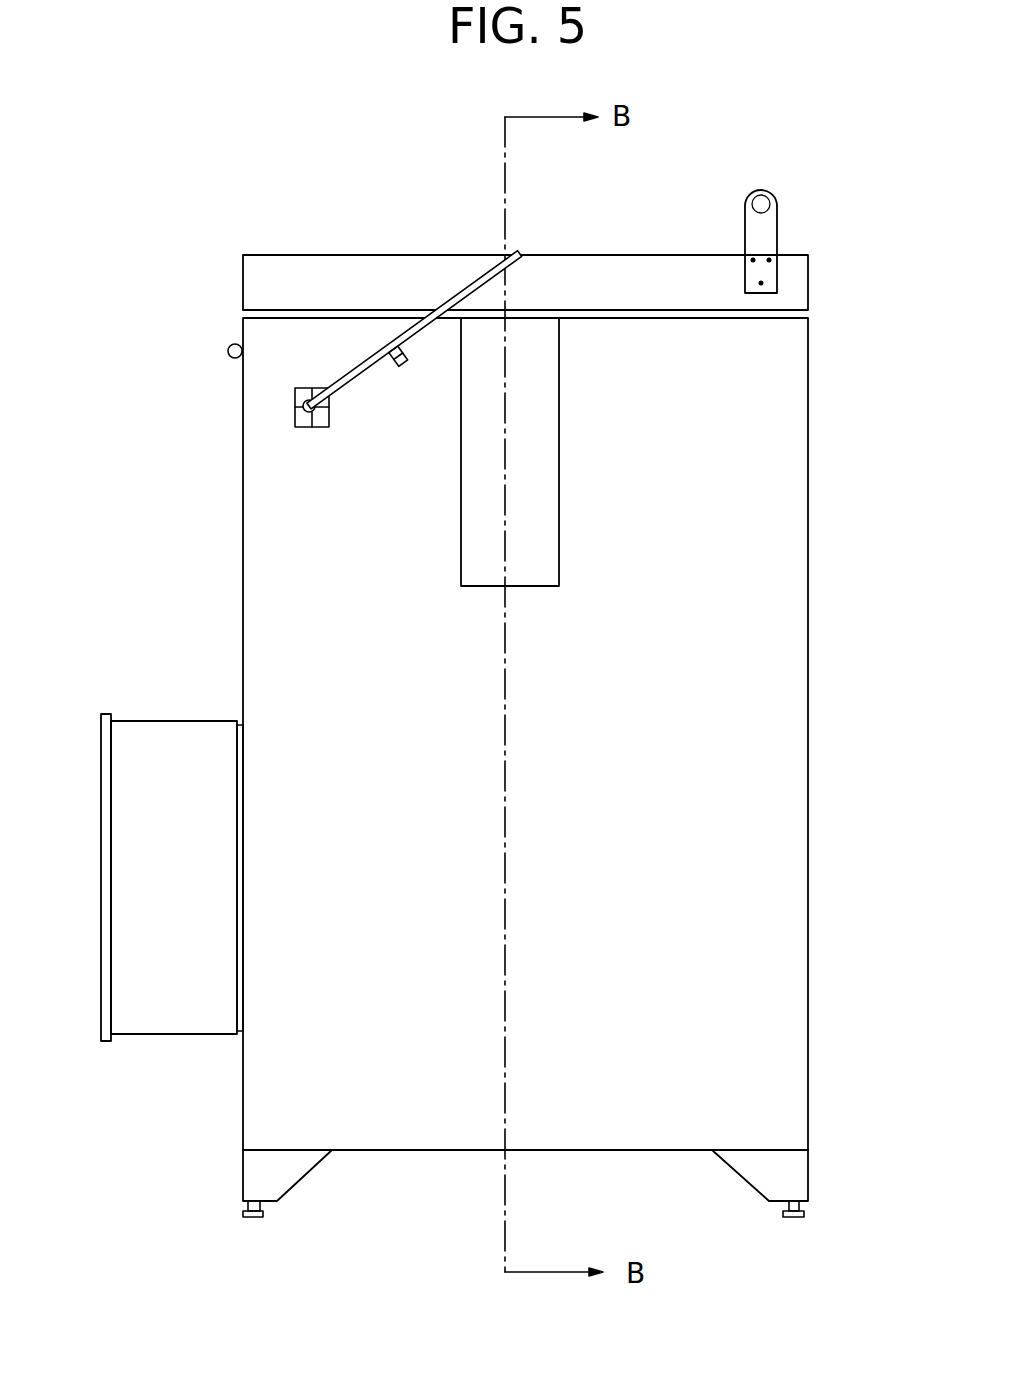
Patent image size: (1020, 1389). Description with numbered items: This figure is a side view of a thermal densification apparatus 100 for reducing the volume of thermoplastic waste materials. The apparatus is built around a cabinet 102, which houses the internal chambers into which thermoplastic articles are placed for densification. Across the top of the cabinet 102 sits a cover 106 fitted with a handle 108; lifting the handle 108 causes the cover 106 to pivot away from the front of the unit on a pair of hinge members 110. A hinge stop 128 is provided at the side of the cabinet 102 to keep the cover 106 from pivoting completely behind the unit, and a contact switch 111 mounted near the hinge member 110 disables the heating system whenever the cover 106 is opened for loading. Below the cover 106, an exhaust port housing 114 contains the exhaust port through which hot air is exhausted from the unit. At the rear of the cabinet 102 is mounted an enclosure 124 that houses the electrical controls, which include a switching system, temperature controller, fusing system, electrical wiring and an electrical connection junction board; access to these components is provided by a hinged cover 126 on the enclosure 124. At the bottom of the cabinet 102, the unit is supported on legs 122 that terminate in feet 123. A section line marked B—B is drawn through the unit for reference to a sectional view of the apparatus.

The apparatus 100 is at (846, 531).
The cabinet 102 is at (806, 790).
The cover 106 is at (590, 255).
The handle 108 is at (760, 189).
The hinge members 110 is at (373, 353).
The contact switch 111 is at (407, 368).
The exhaust port housing 114 is at (559, 475).
The legs 122 is at (312, 1168).
The feet 123 is at (247, 1220).
The enclosure 124 is at (182, 722).
The hinged cover 126 is at (100, 800).
The hinge stop 128 is at (227, 354).